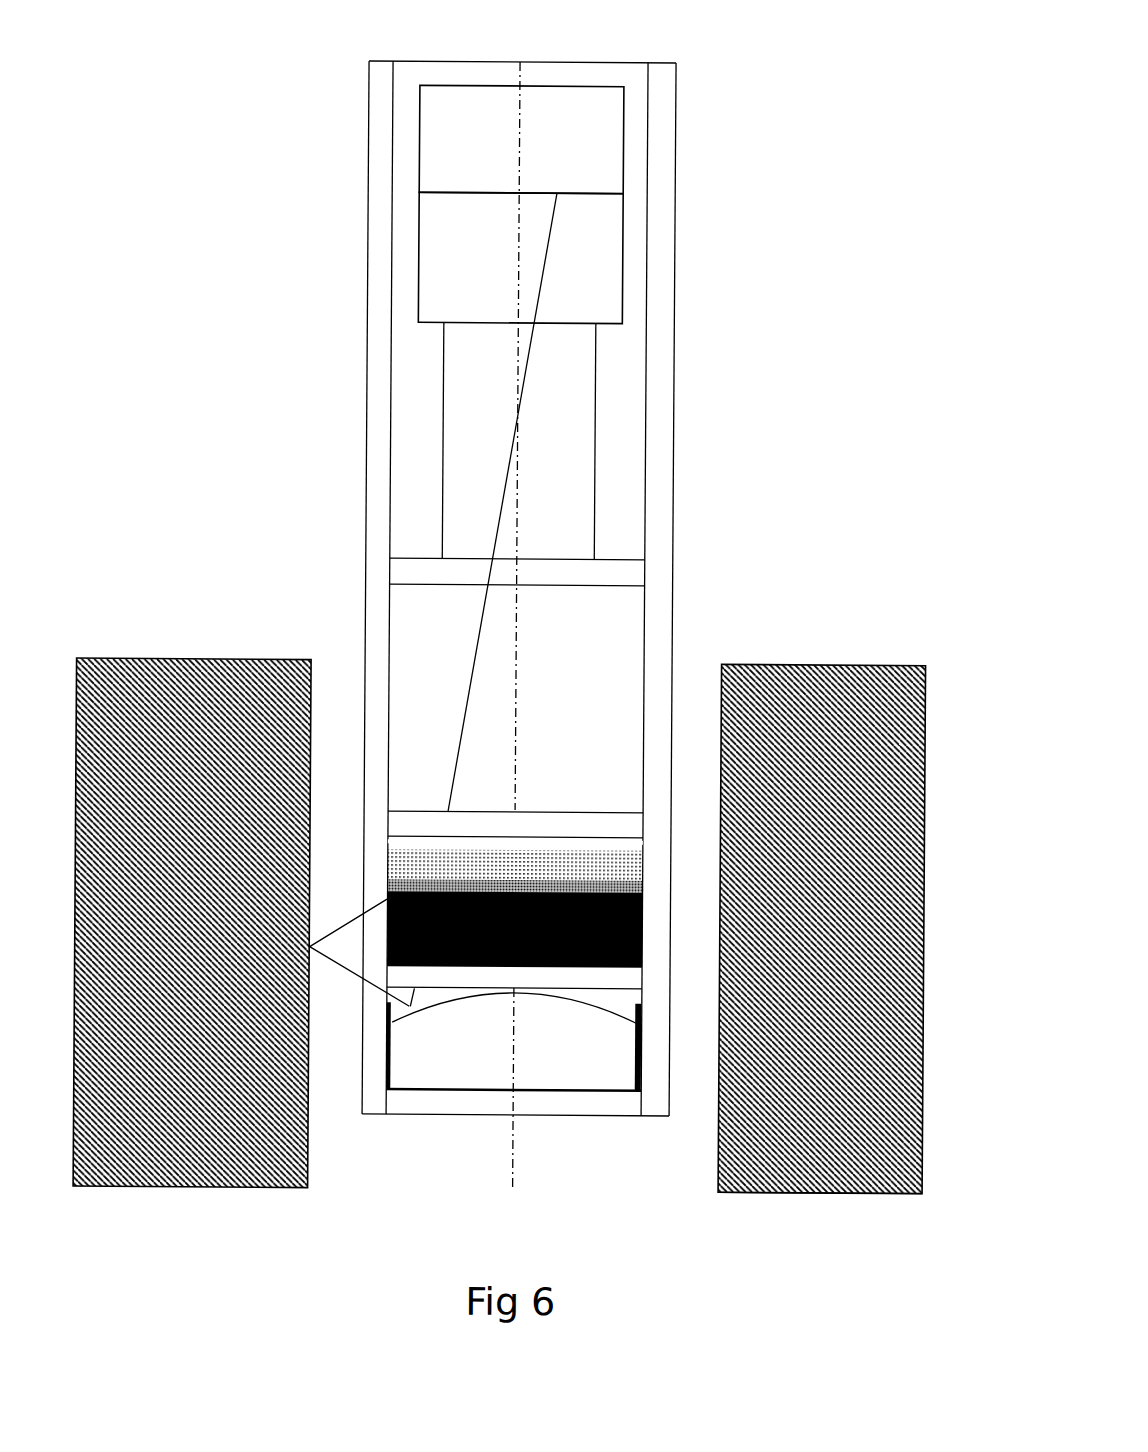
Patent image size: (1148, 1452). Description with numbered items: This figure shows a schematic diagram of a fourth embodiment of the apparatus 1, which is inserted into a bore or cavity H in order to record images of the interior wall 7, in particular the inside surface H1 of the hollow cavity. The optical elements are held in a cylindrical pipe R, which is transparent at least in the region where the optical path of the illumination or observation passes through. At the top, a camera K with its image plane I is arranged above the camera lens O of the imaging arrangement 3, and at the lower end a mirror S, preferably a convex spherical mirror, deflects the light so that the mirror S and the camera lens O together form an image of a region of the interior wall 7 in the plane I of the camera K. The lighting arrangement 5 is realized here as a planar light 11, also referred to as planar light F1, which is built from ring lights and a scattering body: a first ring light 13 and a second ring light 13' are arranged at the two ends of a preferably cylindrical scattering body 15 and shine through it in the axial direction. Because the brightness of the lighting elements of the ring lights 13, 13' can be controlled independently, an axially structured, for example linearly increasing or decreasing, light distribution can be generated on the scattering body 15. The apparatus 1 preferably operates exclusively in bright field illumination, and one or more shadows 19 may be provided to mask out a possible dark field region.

The apparatus 1 is at (695, 36).
The imaging arrangement 3 is at (683, 410).
The lighting arrangement 5 is at (527, 804).
The interior wall 7 is at (718, 686).
The planar light 11 is at (651, 862).
The first ring light 13 is at (516, 798).
The second ring light 13' is at (515, 1021).
The scattering body 15 is at (642, 907).
The shadow 19 is at (387, 1073).
The cylindrical pipe R is at (367, 344).
The cavity H is at (340, 678).
The inside surface of the hollow cavity H1 is at (718, 1163).
The plane of the camera I is at (590, 193).
The camera K is at (623, 240).
The camera lens O is at (596, 360).
The mirror S is at (603, 1007).
The planar light F1 is at (648, 842).